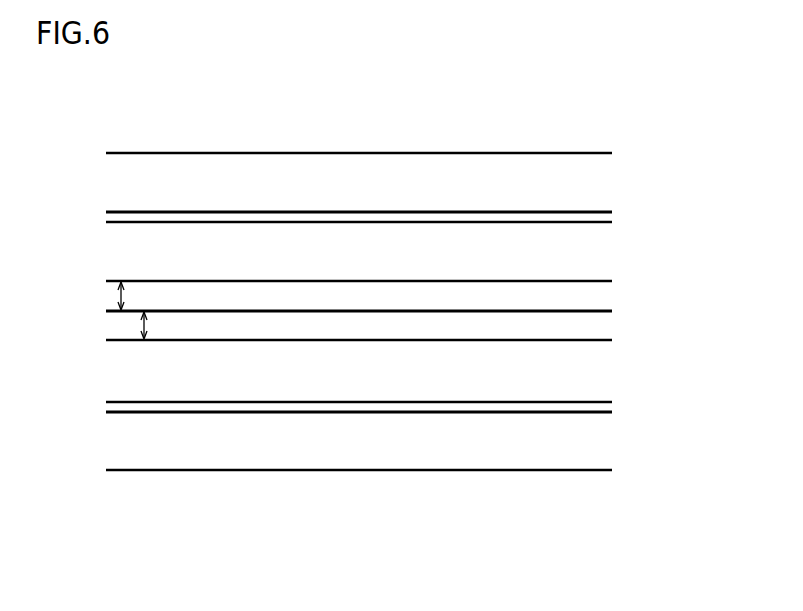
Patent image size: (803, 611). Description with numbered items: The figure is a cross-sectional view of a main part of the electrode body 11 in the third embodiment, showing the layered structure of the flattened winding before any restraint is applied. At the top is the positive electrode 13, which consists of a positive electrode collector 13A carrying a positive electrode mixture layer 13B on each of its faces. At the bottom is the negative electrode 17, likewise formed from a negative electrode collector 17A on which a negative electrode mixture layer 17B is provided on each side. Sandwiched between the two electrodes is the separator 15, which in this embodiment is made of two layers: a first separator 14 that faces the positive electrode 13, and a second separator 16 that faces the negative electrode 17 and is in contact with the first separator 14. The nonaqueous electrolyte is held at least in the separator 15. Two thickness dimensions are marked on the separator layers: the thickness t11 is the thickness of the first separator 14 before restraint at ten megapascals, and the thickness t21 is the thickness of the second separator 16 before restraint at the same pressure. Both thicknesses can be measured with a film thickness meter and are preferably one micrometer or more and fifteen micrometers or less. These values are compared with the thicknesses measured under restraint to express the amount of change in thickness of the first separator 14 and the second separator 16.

The electrode body 11 is at (625, 113).
The positive electrode 13 is at (430, 105).
The positive electrode collector 13A is at (335, 217).
The positive electrode mixture layer 13B is at (268, 175).
The first separator 14 is at (600, 295).
The separator 15 is at (663, 283).
The second separator 16 is at (600, 328).
The negative electrode 17 is at (430, 515).
The negative electrode collector 17A is at (337, 403).
The negative electrode mixture layer 17B is at (271, 377).
The thickness of first separator before restraint t11 is at (119, 296).
The thickness of second separator before restraint t21 is at (142, 325).